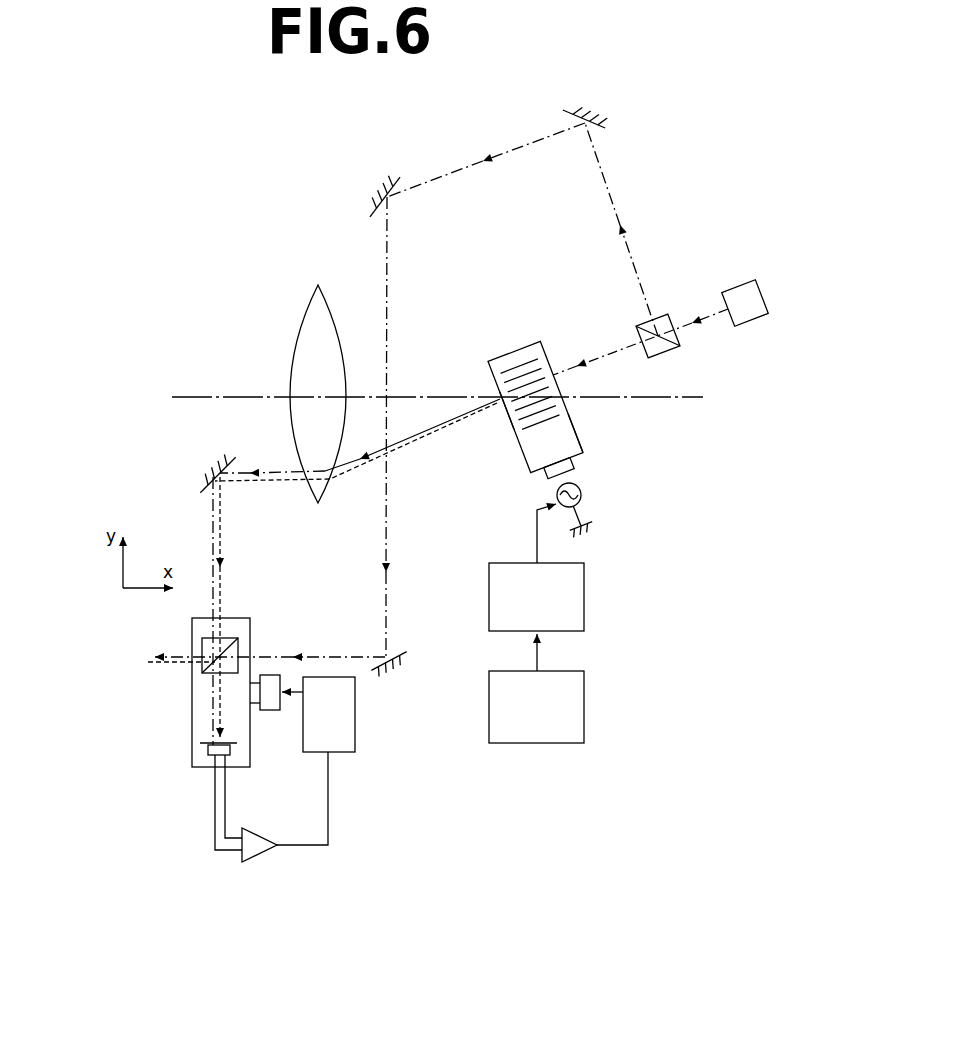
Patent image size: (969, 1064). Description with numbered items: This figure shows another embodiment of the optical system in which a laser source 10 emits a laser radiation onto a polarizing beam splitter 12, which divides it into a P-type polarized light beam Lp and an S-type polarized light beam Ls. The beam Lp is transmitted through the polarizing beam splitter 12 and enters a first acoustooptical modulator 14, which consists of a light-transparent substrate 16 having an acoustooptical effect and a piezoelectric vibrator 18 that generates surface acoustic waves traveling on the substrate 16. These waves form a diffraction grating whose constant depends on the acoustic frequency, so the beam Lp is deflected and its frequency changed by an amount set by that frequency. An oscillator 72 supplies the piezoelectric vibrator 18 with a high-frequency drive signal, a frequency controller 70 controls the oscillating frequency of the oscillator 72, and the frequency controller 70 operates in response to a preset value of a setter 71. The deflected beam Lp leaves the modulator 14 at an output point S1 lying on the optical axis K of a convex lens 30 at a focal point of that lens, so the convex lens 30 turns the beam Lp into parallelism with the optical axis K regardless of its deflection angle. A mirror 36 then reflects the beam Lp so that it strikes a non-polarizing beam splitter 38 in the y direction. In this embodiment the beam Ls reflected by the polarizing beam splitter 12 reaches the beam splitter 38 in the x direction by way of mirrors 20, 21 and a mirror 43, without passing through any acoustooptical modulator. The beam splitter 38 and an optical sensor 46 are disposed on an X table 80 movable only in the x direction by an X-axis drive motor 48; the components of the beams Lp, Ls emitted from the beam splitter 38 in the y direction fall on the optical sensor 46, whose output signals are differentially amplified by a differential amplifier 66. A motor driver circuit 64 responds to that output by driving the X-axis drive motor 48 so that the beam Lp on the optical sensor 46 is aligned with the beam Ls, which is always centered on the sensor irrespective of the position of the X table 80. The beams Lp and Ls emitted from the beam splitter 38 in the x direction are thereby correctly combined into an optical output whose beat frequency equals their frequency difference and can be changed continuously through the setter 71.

The laser source 10 is at (733, 297).
The polarizing beam splitter 12 is at (655, 327).
The first acoustooptical modulator 14 is at (519, 336).
The light-transparent substrate 16 is at (573, 443).
The piezoelectric vibrator 18 is at (573, 461).
The mirror 20 is at (566, 117).
The mirror 21 is at (397, 188).
The convex lens 30 is at (308, 318).
The mirror 36 is at (210, 493).
The beam splitter 38 is at (227, 637).
The mirror 43 is at (392, 647).
The optical sensor 46 is at (208, 748).
The X-axis drive motor 48 is at (270, 712).
The motor driver circuit 64 is at (347, 737).
The differential amplifier 66 is at (258, 852).
The frequency controller 70 is at (578, 582).
The setter 71 is at (578, 688).
The oscillator 72 is at (580, 490).
The X table 80 is at (195, 710).
The optical axis K is at (220, 395).
The S-type polarized light beam Ls is at (612, 192).
The P-type polarized light beam Lp is at (597, 361).
The output point S1 is at (499, 399).